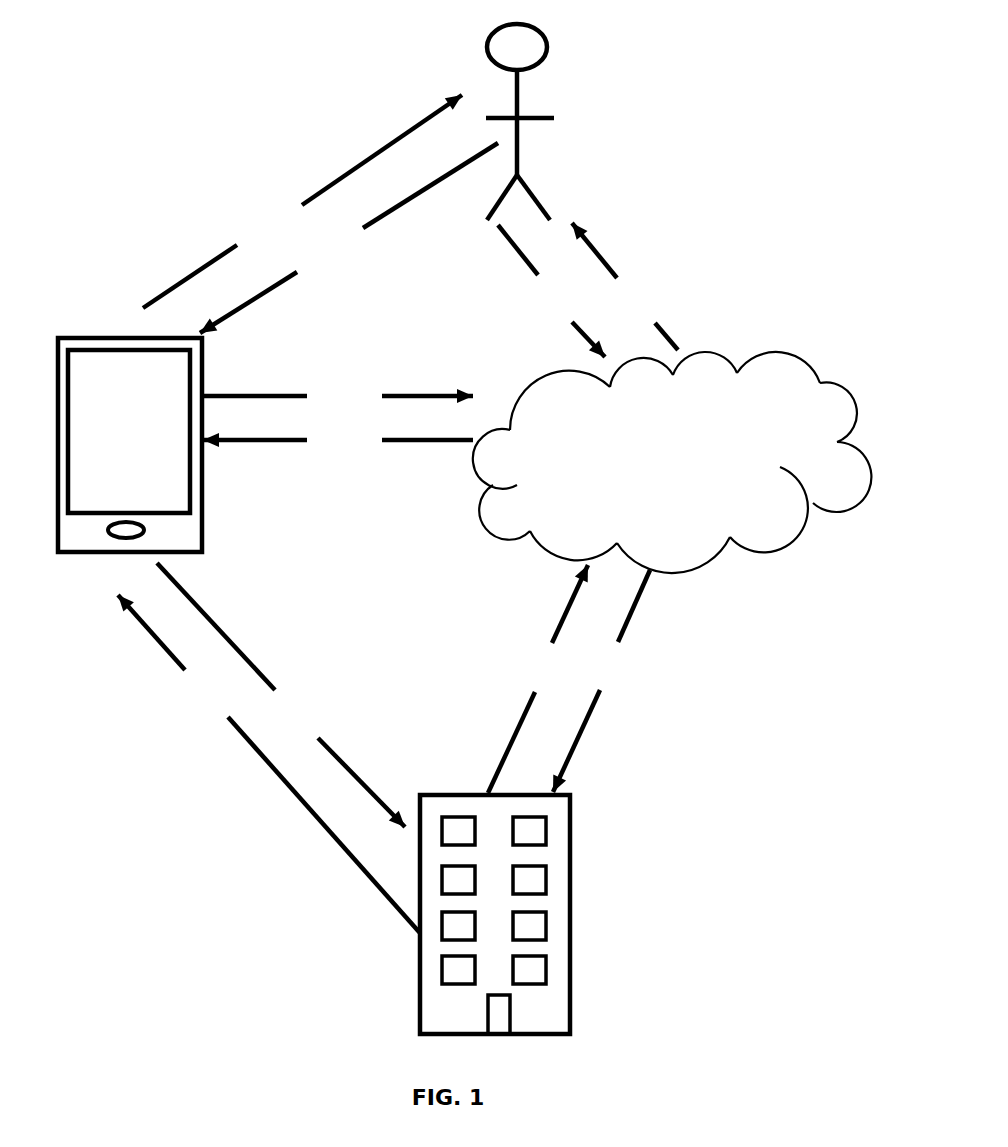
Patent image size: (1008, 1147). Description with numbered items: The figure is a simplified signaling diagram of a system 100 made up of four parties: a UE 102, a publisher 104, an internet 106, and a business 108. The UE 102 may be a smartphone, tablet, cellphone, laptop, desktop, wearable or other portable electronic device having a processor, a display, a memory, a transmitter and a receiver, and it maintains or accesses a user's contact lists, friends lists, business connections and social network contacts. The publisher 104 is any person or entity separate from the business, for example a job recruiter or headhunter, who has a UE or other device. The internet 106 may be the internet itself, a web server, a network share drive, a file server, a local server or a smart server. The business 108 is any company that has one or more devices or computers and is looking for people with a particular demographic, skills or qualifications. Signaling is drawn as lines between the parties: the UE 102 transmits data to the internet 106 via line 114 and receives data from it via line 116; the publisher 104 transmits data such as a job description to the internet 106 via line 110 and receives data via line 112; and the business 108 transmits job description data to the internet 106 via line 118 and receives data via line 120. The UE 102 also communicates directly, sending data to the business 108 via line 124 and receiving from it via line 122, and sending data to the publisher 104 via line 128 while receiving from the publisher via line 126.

The system 100 is at (263, 108).
The UE 102 is at (130, 445).
The publisher 104 is at (555, 45).
The internet 106 is at (672, 462).
The business 108 is at (572, 913).
The line 110 is at (551, 291).
The line 112 is at (625, 286).
The line 114 is at (337, 403).
The line 116 is at (338, 447).
The line 118 is at (538, 679).
The line 120 is at (601, 681).
The line 122 is at (269, 764).
The line 124 is at (281, 695).
The line 126 is at (349, 238).
The line 128 is at (302, 201).